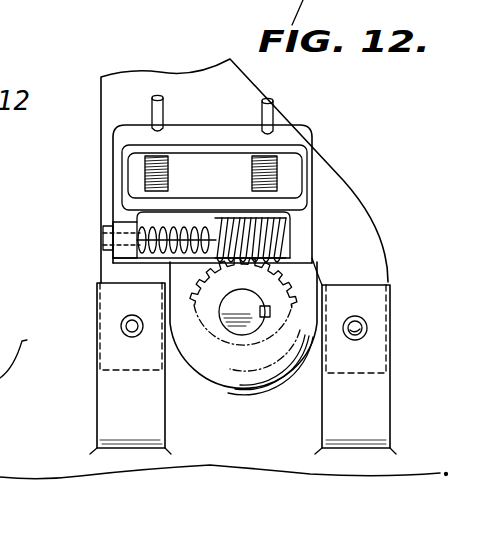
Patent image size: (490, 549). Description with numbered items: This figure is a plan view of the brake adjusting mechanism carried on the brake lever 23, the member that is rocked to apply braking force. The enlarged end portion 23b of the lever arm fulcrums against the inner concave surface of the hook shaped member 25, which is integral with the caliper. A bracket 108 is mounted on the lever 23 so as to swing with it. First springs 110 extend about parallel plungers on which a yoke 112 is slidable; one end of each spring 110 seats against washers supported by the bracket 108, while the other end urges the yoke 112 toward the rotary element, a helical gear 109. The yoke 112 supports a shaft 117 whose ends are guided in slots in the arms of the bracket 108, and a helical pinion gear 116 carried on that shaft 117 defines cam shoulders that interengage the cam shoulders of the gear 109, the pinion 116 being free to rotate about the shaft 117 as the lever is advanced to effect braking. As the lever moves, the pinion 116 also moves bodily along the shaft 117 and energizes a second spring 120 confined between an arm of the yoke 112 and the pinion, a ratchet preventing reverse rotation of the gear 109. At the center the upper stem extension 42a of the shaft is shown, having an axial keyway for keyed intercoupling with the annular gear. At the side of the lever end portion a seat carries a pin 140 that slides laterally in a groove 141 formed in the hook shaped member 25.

The lever 23 is at (190, 82).
The enlarged end portion of lever arm 23b is at (97, 369).
The hook shaped member 25 is at (112, 405).
The upper stem extension of shaft 42a is at (238, 330).
The bracket 108 is at (283, 133).
The helical gear 109 is at (266, 287).
The first springs 110 is at (252, 173).
The yoke 112 is at (287, 190).
The helical pinion gear 116 is at (268, 237).
The shaft 117 is at (135, 218).
The second spring 120 is at (163, 259).
The pin 140 is at (364, 327).
The groove 141 is at (357, 339).